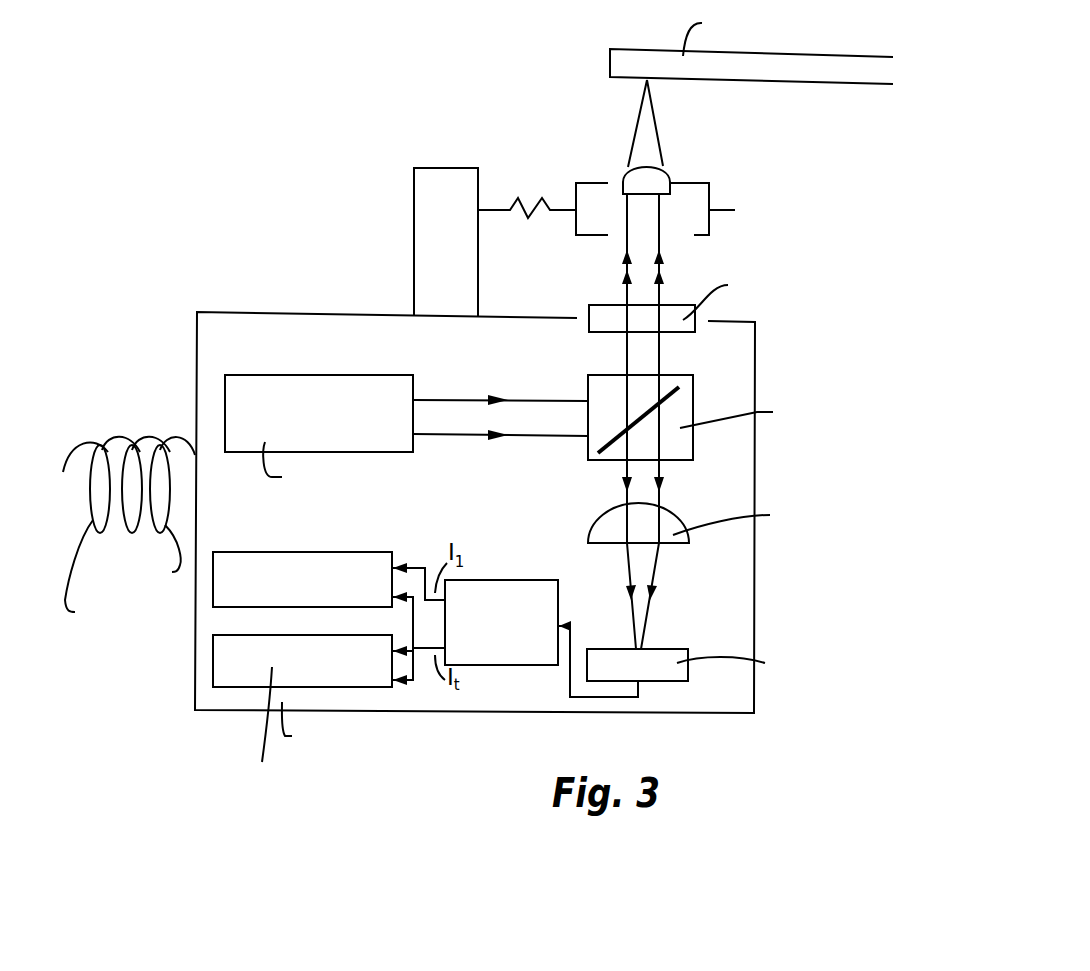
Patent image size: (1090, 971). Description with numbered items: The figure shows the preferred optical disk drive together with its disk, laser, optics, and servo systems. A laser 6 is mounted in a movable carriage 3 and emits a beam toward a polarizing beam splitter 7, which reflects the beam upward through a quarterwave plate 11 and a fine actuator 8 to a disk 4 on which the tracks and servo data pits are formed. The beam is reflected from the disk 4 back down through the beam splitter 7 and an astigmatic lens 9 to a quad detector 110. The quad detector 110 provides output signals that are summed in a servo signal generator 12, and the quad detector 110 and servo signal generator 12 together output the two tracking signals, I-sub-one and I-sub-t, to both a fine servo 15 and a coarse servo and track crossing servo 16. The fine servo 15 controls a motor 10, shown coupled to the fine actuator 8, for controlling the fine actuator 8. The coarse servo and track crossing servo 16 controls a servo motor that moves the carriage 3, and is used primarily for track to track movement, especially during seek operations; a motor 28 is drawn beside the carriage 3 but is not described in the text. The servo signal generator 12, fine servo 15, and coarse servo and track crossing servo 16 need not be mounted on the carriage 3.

The movable carriage 3 is at (220, 700).
The disk 4 is at (772, 70).
The laser 6 is at (245, 383).
The polarizing beam splitter 7 is at (682, 408).
The fine actuator 8 is at (693, 192).
The astigmatic lens 9 is at (665, 522).
The motor 10 is at (545, 203).
The quarterwave plate 11 is at (672, 313).
The servo signal generator 12 is at (538, 590).
The fine servo 15 is at (363, 562).
The coarse servo and track crossing servo 16 is at (375, 645).
The motor 28 is at (129, 529).
The quad detector 110 is at (665, 657).